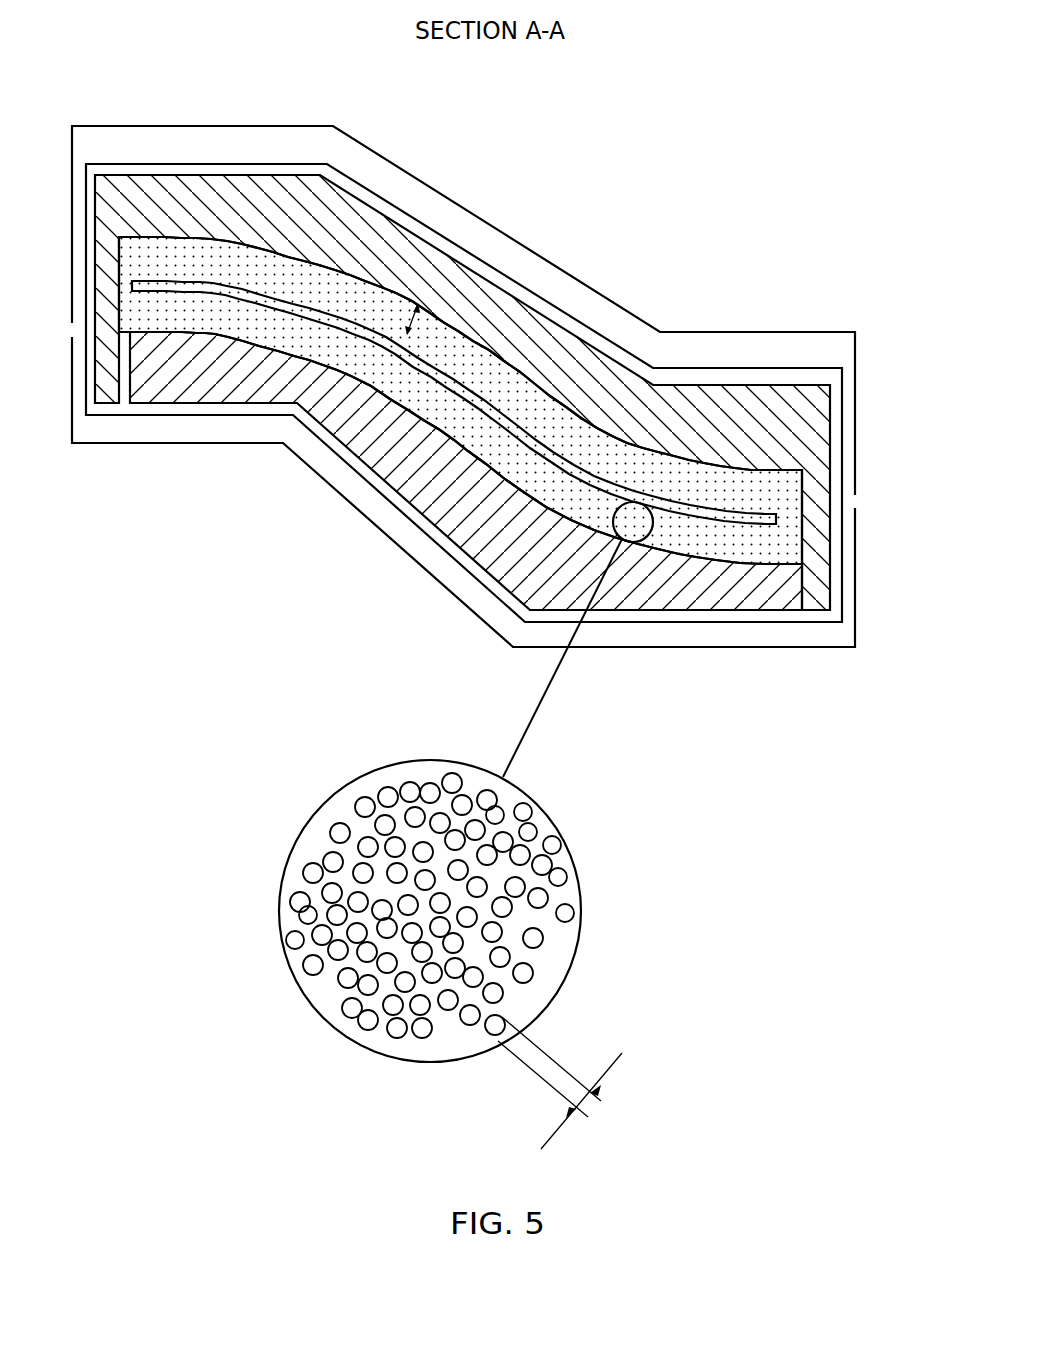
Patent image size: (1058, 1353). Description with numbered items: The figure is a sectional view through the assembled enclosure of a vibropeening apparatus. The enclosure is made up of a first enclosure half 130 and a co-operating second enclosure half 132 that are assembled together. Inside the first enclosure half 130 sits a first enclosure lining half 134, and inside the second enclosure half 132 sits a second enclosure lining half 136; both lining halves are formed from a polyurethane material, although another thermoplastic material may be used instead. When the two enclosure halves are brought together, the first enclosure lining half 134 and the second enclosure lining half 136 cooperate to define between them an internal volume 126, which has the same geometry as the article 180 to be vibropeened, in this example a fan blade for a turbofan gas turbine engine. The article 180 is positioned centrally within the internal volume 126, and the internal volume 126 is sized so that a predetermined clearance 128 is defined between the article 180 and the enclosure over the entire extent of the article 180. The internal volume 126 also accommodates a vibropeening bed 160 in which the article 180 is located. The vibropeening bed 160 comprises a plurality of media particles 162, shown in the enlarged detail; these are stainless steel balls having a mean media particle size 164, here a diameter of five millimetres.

The internal volume 126 is at (358, 303).
The predetermined clearance 128 is at (419, 305).
The first enclosure half 130 is at (627, 312).
The second enclosure half 132 is at (647, 649).
The first enclosure lining half 134 is at (732, 415).
The second enclosure lining half 136 is at (732, 588).
The vibropeening bed 160 is at (783, 495).
The media particles 162 is at (430, 787).
The mean media particle size 164 is at (612, 1070).
The article 180 is at (257, 287).